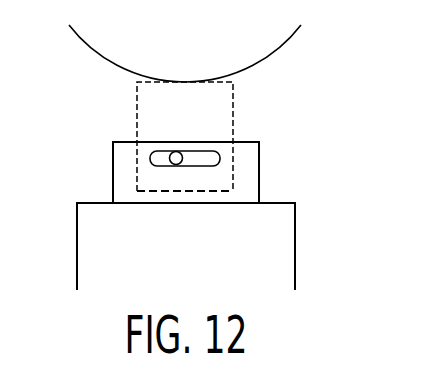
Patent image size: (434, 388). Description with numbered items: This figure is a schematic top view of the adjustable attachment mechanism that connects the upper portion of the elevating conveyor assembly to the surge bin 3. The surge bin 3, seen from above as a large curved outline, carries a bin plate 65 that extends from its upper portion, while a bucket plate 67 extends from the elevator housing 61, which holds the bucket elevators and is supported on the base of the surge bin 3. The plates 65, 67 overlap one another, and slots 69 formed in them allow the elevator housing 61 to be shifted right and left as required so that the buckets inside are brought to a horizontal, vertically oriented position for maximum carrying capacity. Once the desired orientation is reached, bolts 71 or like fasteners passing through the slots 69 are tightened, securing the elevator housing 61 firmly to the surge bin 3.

The surge bin 3 is at (110, 60).
The elevator housing 61 is at (77, 235).
The bin plate 65 is at (233, 100).
The bucket plate 67 is at (259, 163).
The slots 69 is at (203, 159).
The bolts 71 is at (176, 151).